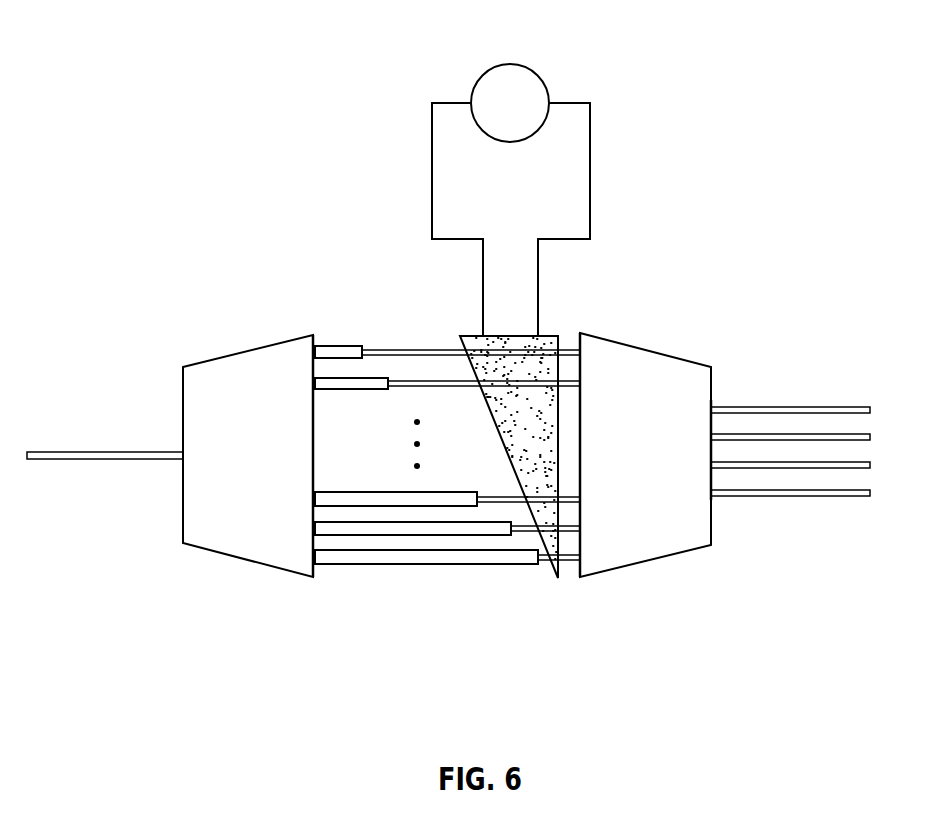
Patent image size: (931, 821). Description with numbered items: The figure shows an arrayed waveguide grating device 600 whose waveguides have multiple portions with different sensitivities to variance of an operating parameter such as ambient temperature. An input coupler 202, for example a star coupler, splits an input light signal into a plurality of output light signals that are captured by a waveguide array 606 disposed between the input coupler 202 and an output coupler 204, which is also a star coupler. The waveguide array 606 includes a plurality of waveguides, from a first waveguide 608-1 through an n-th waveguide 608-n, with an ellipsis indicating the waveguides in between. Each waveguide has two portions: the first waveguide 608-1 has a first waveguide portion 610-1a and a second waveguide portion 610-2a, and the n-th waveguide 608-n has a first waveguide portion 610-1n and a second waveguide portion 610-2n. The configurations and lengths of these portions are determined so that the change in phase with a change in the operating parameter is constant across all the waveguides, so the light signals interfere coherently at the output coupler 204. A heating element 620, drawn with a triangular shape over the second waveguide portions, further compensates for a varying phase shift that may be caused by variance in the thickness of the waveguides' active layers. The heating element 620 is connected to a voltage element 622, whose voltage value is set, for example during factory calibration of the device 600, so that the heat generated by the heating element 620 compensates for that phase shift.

The arrayed waveguide grating device 600 is at (672, 48).
The input coupler 202 is at (235, 550).
The output coupler 204 is at (645, 552).
The waveguide array 606 is at (423, 638).
The first waveguide 608-1 is at (357, 302).
The n-th waveguide 608-n is at (424, 633).
The first waveguide portion of the first waveguide 610-1a is at (333, 346).
The second waveguide portion of the first waveguide 610-2a is at (471, 309).
The first waveguide portion of the n-th waveguide 610-1n is at (390, 567).
The second waveguide portion of the n-th waveguide 610-2n is at (543, 564).
The heating element 620 is at (542, 336).
The voltage element 622 is at (508, 64).